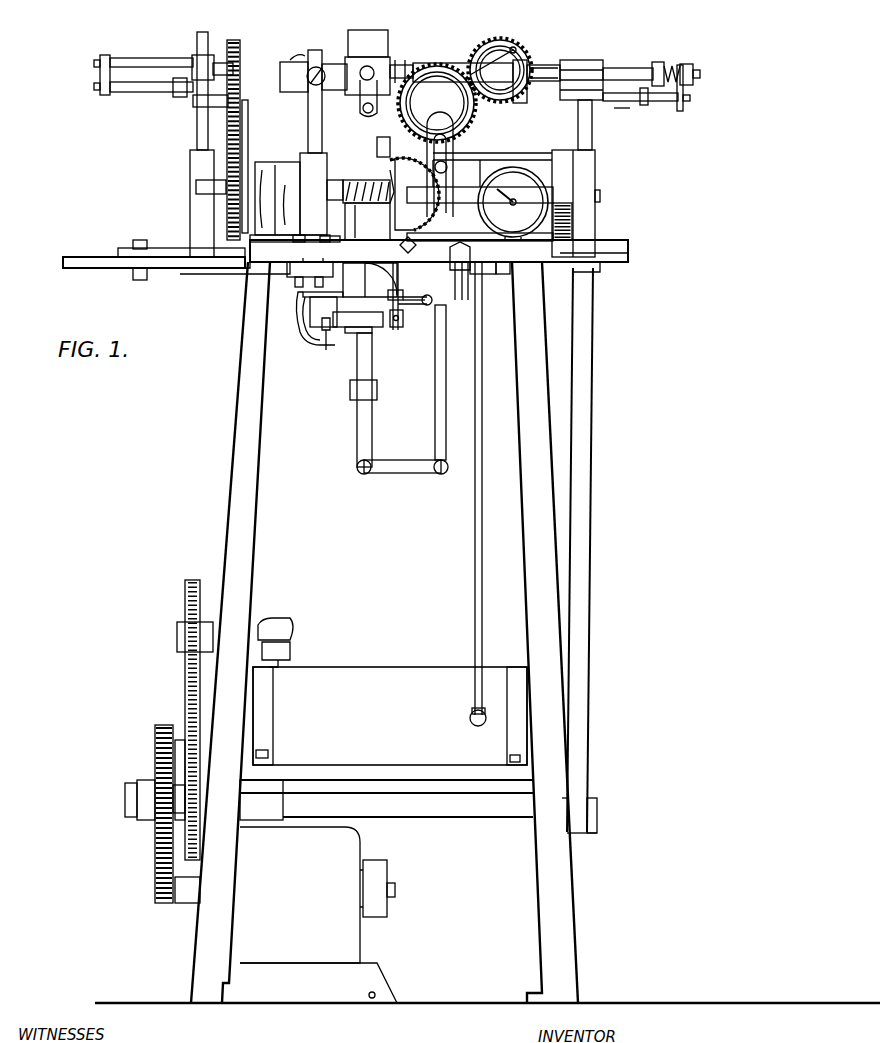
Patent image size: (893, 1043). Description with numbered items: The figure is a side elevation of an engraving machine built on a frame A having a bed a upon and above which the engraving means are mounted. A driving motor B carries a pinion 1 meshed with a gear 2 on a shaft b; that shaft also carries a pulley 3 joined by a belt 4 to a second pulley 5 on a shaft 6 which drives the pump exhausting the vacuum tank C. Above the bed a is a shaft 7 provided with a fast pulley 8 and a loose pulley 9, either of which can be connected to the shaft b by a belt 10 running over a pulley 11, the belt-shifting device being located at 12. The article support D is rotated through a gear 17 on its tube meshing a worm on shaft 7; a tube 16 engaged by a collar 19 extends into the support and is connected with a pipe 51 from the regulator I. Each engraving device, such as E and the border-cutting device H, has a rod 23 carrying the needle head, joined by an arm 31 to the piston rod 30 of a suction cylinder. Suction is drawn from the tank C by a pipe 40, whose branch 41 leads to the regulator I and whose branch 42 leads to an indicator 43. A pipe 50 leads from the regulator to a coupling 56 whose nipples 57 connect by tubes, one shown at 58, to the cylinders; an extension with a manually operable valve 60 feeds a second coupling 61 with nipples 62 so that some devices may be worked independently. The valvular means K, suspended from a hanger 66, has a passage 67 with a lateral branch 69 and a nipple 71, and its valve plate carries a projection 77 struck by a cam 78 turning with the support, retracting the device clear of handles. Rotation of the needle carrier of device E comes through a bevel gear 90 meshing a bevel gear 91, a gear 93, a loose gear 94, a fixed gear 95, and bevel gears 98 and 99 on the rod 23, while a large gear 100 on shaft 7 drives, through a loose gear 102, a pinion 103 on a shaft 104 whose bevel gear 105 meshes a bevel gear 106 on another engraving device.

The pinion 1 is at (157, 893).
The gear 2 is at (155, 745).
The pulley 3 is at (182, 740).
The belt 4 is at (185, 702).
The second pulley 5 is at (185, 614).
The shaft 6 is at (273, 622).
The shaft 7 is at (465, 185).
The fast pulley 8 is at (565, 185).
The loose pulley 9 is at (596, 242).
The belt 10 is at (592, 460).
The pulley 11 is at (598, 826).
The belt-shifting device 12 is at (598, 275).
The tube 16 is at (357, 436).
The gear 17 is at (333, 192).
The collar 19 is at (377, 395).
The rod 23 is at (128, 58).
The piston rod 30 is at (135, 92).
The arm 31 is at (105, 78).
The pipe 40 is at (475, 578).
The branch 41 is at (490, 290).
The branch 42 is at (493, 270).
The indicator 43 is at (575, 198).
The pipe 50 is at (430, 300).
The pipe 51 is at (450, 410).
The coupling 56 is at (395, 330).
The nipples 57 is at (405, 328).
The pipe 58 is at (530, 104).
The manually operable valve 60 is at (387, 248).
The coupling 61 is at (364, 221).
The nipples 62 is at (328, 248).
The hanger or bracket 66 is at (300, 288).
The passage 67 is at (370, 280).
The lateral branch 69 is at (403, 296).
The nipple 71 is at (322, 348).
The projection 77 is at (330, 355).
The cam 78 is at (358, 322).
The bevel gear 90 is at (385, 178).
The second bevel gear 91 is at (408, 170).
The gear 93 is at (380, 150).
The loose gear 94 is at (440, 95).
The fixed gear 95 is at (505, 42).
The bevel gear 98 is at (540, 62).
The bevel gear 99 is at (515, 62).
The large gear 100 is at (227, 205).
The loose gear 102 is at (227, 172).
The pinion 103 is at (215, 112).
The shaft 104 is at (205, 63).
The bevel gear 105 is at (328, 62).
The bevel gear 106 is at (380, 55).
The frame A is at (487, 632).
The driving motor B is at (318, 915).
The vacuum tank C is at (390, 716).
The support D is at (323, 101).
The engraving device E is at (622, 119).
The engraving device H is at (282, 46).
The regulator I is at (460, 294).
The valvular means K is at (308, 298).
The bed a is at (436, 253).
The shaft b is at (455, 815).